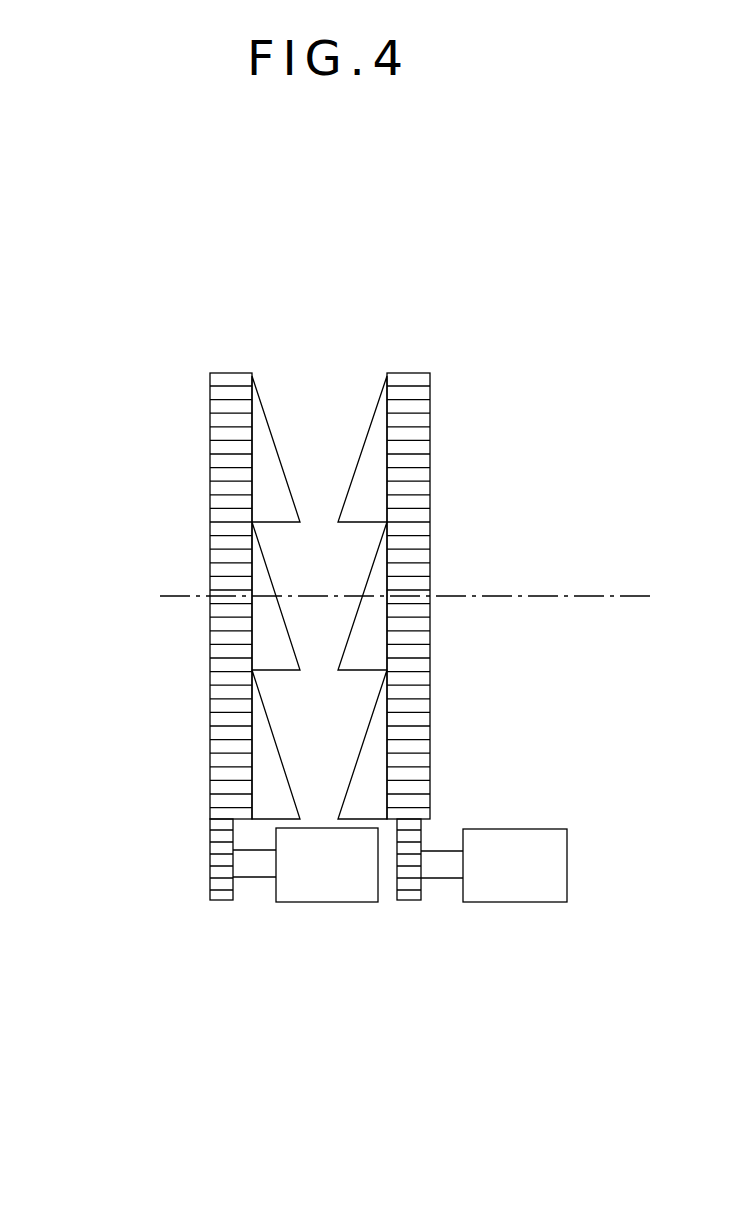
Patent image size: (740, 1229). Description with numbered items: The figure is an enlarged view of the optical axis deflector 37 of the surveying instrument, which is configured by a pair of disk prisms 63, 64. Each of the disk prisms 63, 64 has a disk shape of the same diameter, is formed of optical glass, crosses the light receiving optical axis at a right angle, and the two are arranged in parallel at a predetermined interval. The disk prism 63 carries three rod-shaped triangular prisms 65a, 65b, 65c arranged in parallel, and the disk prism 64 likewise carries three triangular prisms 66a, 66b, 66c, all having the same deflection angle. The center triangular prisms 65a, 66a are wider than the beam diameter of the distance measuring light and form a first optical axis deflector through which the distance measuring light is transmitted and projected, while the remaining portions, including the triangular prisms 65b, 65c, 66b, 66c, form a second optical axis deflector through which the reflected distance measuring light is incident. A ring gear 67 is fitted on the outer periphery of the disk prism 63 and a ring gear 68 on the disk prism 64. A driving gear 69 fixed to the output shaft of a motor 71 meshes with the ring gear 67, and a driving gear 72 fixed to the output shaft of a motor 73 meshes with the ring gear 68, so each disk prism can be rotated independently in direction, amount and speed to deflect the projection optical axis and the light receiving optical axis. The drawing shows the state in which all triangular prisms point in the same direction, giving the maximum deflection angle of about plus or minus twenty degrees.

The optical axis deflector 37 is at (322, 159).
The disk prism 63 is at (430, 795).
The disk prism 64 is at (210, 787).
The triangular prism 65a is at (353, 628).
The triangular prism 65b is at (370, 423).
The triangular prism 65c is at (358, 778).
The triangular prism 66a is at (278, 590).
The triangular prism 66b is at (268, 423).
The triangular prism 66c is at (277, 750).
The ring gear 67 is at (408, 375).
The ring gear 68 is at (225, 375).
The driving gear 69 is at (416, 903).
The motor 71 is at (532, 903).
The driving gear 72 is at (225, 903).
The motor 73 is at (297, 903).